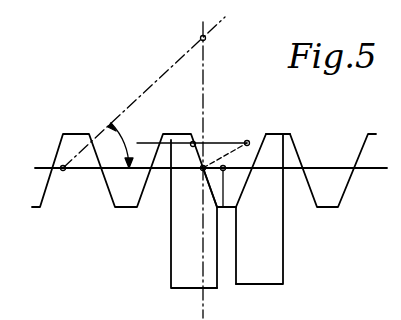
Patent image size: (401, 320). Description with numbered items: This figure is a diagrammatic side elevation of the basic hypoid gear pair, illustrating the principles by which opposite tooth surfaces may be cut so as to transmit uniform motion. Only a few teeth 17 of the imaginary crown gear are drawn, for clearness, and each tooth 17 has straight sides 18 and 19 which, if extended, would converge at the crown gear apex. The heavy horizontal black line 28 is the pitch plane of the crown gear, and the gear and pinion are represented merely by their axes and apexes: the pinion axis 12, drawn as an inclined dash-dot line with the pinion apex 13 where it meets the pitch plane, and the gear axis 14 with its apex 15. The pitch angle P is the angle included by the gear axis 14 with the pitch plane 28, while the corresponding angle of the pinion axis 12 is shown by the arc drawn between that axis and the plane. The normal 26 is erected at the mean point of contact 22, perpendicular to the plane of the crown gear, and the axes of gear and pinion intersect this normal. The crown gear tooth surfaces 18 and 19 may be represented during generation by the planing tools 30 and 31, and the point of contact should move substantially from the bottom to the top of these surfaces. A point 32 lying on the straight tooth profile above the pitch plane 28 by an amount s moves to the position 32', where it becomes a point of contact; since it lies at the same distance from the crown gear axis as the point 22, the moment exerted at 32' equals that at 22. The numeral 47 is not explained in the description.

The pinion axis 12 is at (157, 80).
The normal 26 is at (207, 72).
The pitch plane of the crown gear 28 is at (361, 170).
The crown gear tooth 17 is at (95, 150).
The crown gear tooth side 19 is at (262, 132).
The pitch angle of gear P is at (123, 145).
The pinion apex 13 is at (63, 171).
The point on tooth profile 32 is at (192, 156).
The moved position of point 32 32' is at (251, 129).
The mean point of contact 22 is at (202, 170).
The gear apex 15 is at (225, 166).
The crown gear tooth side 18 is at (216, 203).
The planing tool 30 is at (182, 243).
The planing tool 31 is at (276, 237).
The gear axis 14 is at (219, 290).
The reference 47 is at (387, 293).